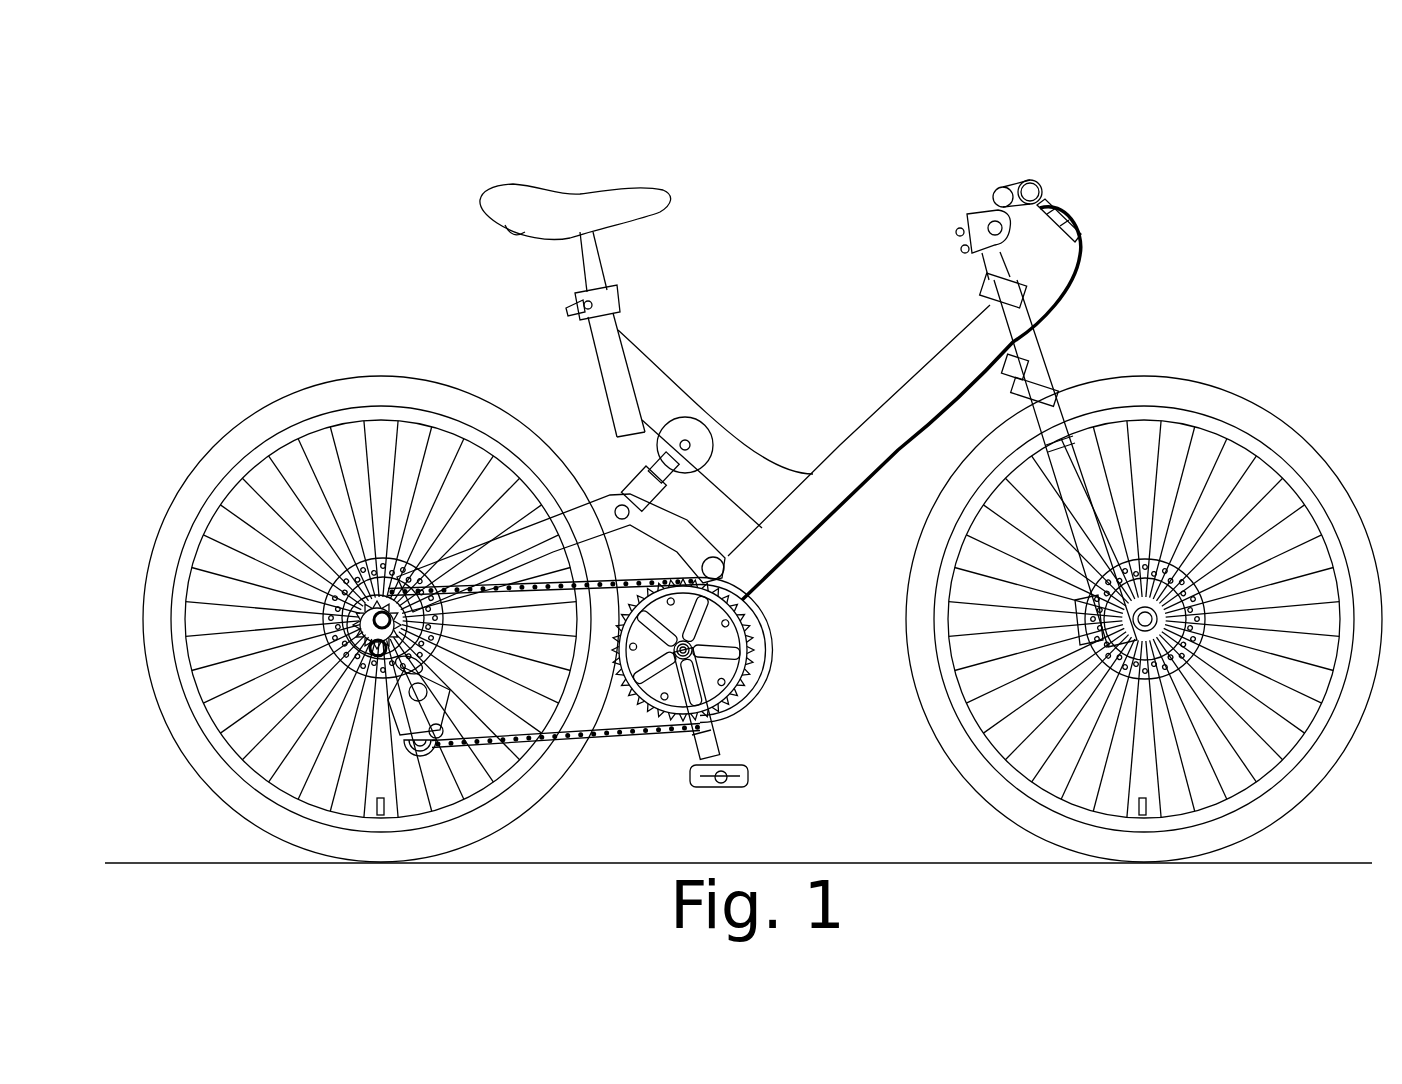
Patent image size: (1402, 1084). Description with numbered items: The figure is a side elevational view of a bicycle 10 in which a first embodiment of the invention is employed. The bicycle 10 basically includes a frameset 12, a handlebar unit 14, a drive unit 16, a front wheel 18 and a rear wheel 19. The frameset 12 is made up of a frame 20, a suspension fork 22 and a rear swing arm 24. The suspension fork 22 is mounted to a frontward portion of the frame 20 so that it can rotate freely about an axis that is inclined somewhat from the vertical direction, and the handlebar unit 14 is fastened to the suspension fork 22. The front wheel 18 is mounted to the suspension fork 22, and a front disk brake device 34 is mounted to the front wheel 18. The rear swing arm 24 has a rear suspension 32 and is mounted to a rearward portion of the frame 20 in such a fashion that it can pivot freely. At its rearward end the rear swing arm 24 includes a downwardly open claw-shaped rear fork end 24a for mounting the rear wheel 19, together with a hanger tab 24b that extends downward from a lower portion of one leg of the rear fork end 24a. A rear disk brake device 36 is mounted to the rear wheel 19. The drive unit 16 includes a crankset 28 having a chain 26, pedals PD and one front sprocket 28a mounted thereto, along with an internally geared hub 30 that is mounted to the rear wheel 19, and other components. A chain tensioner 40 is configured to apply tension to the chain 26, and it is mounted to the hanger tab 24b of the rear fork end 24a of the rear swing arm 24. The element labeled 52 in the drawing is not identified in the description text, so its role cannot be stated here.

The bicycle 10 is at (801, 252).
The frameset 12 is at (874, 370).
The handlebar unit 14 is at (990, 190).
The drive unit 16 is at (663, 760).
The front wheel 18 is at (1258, 415).
The rear wheel 19 is at (275, 415).
The frame 20 is at (818, 487).
The suspension fork 22 is at (1083, 488).
The rear swing arm 24 is at (525, 535).
The rear fork end 24a is at (337, 660).
The hanger tab 24b is at (337, 647).
The chain 26 is at (615, 740).
The crankset 28 is at (768, 699).
The front sprocket 28a is at (765, 607).
The internally geared hub 30 is at (362, 545).
The rear suspension 32 is at (655, 435).
The front disk brake device 34 is at (1200, 555).
The rear disk brake device 36 is at (440, 445).
The chain tensioner 40 is at (395, 705).
The rear sprocket 52 is at (323, 605).
The pedals PD is at (755, 780).